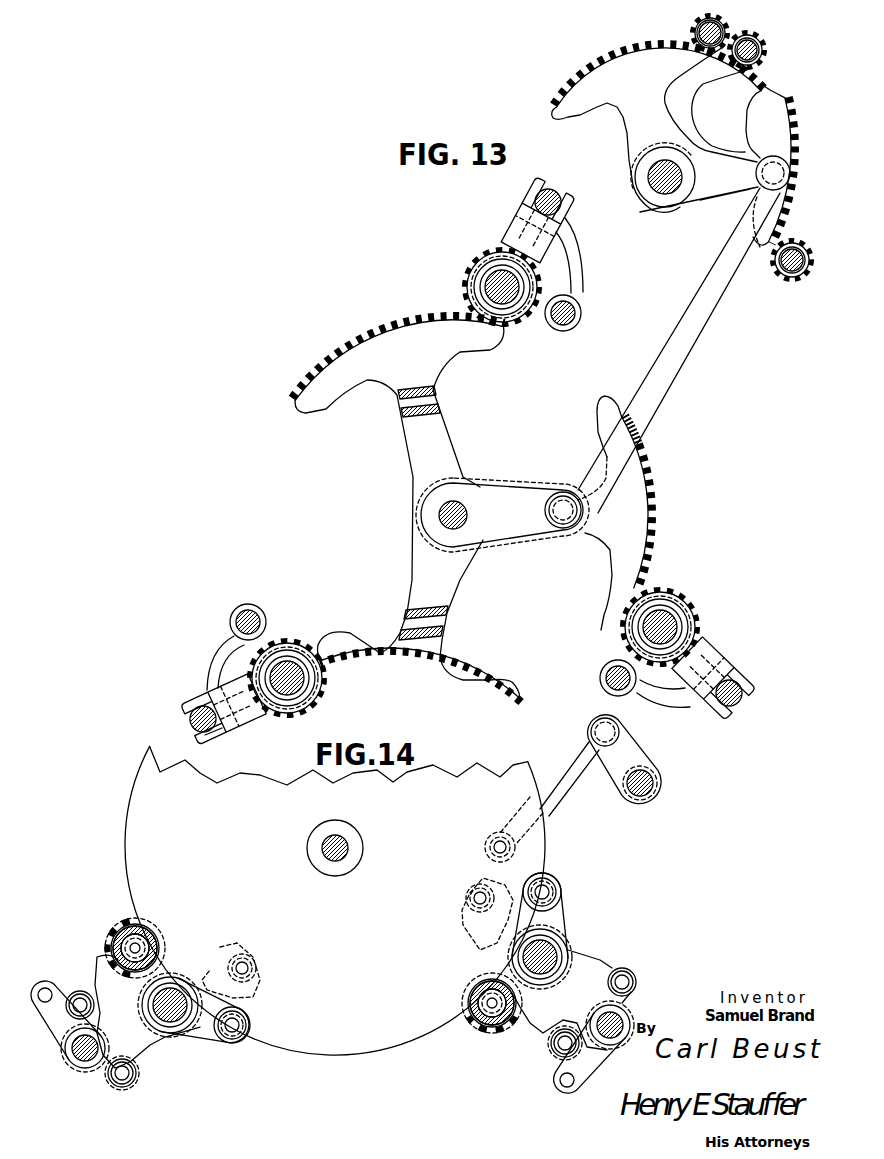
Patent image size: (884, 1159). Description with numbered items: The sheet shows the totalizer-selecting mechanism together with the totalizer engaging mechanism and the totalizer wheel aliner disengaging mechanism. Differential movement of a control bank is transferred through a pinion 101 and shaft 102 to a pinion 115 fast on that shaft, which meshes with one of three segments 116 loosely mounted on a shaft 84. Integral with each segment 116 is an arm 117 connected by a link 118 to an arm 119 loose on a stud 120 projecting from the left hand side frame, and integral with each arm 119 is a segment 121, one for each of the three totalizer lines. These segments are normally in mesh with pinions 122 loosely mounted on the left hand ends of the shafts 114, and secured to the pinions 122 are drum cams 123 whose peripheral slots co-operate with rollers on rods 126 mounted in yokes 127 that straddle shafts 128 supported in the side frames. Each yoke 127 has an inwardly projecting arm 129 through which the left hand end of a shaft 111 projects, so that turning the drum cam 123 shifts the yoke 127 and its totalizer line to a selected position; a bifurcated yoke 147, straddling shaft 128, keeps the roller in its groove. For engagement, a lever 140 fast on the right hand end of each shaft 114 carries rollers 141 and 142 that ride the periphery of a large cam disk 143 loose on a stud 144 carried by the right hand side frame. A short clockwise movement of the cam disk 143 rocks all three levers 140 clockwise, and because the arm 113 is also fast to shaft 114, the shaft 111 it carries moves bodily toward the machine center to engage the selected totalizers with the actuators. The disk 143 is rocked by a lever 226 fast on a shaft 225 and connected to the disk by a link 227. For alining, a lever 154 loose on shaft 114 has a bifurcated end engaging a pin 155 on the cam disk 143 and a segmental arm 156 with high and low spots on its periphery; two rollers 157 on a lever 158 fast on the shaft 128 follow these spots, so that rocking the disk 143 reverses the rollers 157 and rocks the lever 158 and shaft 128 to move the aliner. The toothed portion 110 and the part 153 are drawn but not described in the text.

In FIG. 13, the shaft 84 is at (668, 190).
In FIG. 13, the pinion 101 is at (766, 52).
In FIG. 13, the shaft 102 is at (795, 282).
In FIG. 14, the ratchet teeth 110 is at (98, 945).
In FIG. 13, the shaft 111 is at (578, 314).
In FIG. 14, the shaft 111 is at (128, 940).
In FIG. 14, the arm 113 is at (122, 985).
In FIG. 13, the shaft 114 is at (492, 280).
In FIG. 14, the shaft 114 is at (172, 1022).
In FIG. 13, the pinion 115 is at (730, 28).
In FIG. 13, the segment 116 is at (760, 122).
In FIG. 13, the arm 117 is at (707, 195).
In FIG. 13, the link 118 is at (697, 343).
In FIG. 13, the arm 119 is at (503, 497).
In FIG. 13, the stud 120 is at (438, 515).
In FIG. 13, the segment 121 is at (372, 322).
In FIG. 13, the pinion 122 is at (685, 596).
In FIG. 13, the drum cam 123 is at (690, 612).
In FIG. 13, the rod 126 is at (250, 724).
In FIG. 13, the yoke 127 is at (738, 678).
In FIG. 13, the shaft 128 is at (556, 192).
In FIG. 14, the shaft 128 is at (82, 1062).
In FIG. 13, the arm 129 is at (575, 276).
In FIG. 14, the lever 140 is at (560, 912).
In FIG. 14, the roller 141 is at (560, 888).
In FIG. 14, the roller 142 is at (140, 935).
In FIG. 14, the cam disk 143 is at (535, 833).
In FIG. 14, the stud 144 is at (349, 848).
In FIG. 13, the yoke 147 is at (225, 733).
In FIG. 14, the lever 153 is at (45, 1022).
In FIG. 14, the lever 154 is at (262, 985).
In FIG. 14, the pin 155 is at (255, 965).
In FIG. 14, the segmental arm 156 is at (128, 1060).
In FIG. 14, the roller 157 is at (80, 992).
In FIG. 14, the lever 158 is at (112, 1085).
In FIG. 14, the shaft 225 is at (662, 792).
In FIG. 14, the lever 226 is at (627, 760).
In FIG. 14, the link 227 is at (570, 782).